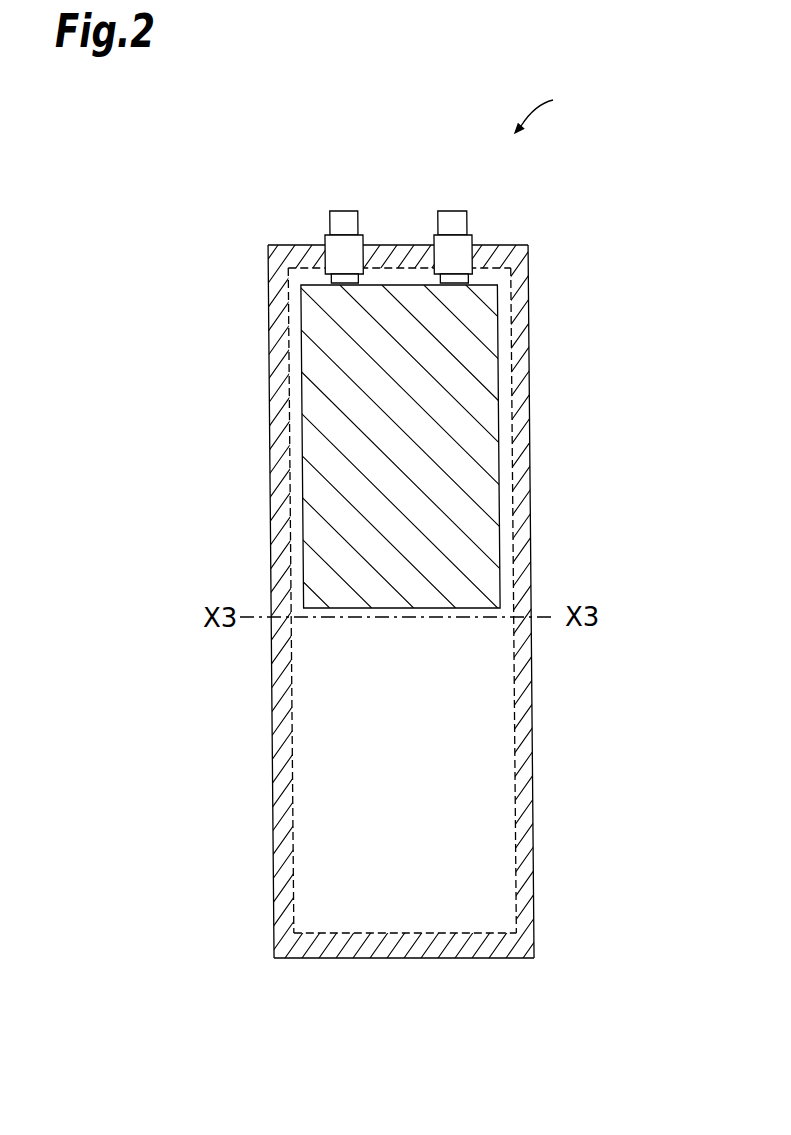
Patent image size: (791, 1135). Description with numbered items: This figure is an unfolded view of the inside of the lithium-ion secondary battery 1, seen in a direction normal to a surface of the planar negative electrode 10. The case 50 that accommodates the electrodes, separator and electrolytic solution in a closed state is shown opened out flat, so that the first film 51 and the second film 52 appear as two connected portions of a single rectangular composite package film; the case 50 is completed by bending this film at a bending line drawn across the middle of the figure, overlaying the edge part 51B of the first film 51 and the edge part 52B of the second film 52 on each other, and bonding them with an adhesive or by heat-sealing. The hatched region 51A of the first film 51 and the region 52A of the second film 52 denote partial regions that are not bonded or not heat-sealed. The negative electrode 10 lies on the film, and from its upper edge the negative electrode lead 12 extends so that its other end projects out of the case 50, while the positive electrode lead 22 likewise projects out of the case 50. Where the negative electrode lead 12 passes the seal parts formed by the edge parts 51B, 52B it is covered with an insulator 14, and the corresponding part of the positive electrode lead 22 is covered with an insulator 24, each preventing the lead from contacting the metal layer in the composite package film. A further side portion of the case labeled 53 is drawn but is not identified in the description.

The lithium-ion secondary battery 1 is at (578, 90).
The negative electrode 10 is at (325, 528).
The negative electrode lead 12 is at (343, 211).
The insulator 14 is at (327, 244).
The positive electrode lead 22 is at (452, 211).
The insulator 24 is at (440, 244).
The case 50 is at (667, 265).
The first film 51 is at (474, 912).
The partial region of the first film 51A is at (487, 893).
The edge part of the first film 51B is at (525, 947).
The second film 52 is at (469, 274).
The partial region of the second film 52A is at (490, 275).
The edge part of the second film 52B is at (521, 252).
The side wall 53 is at (533, 648).